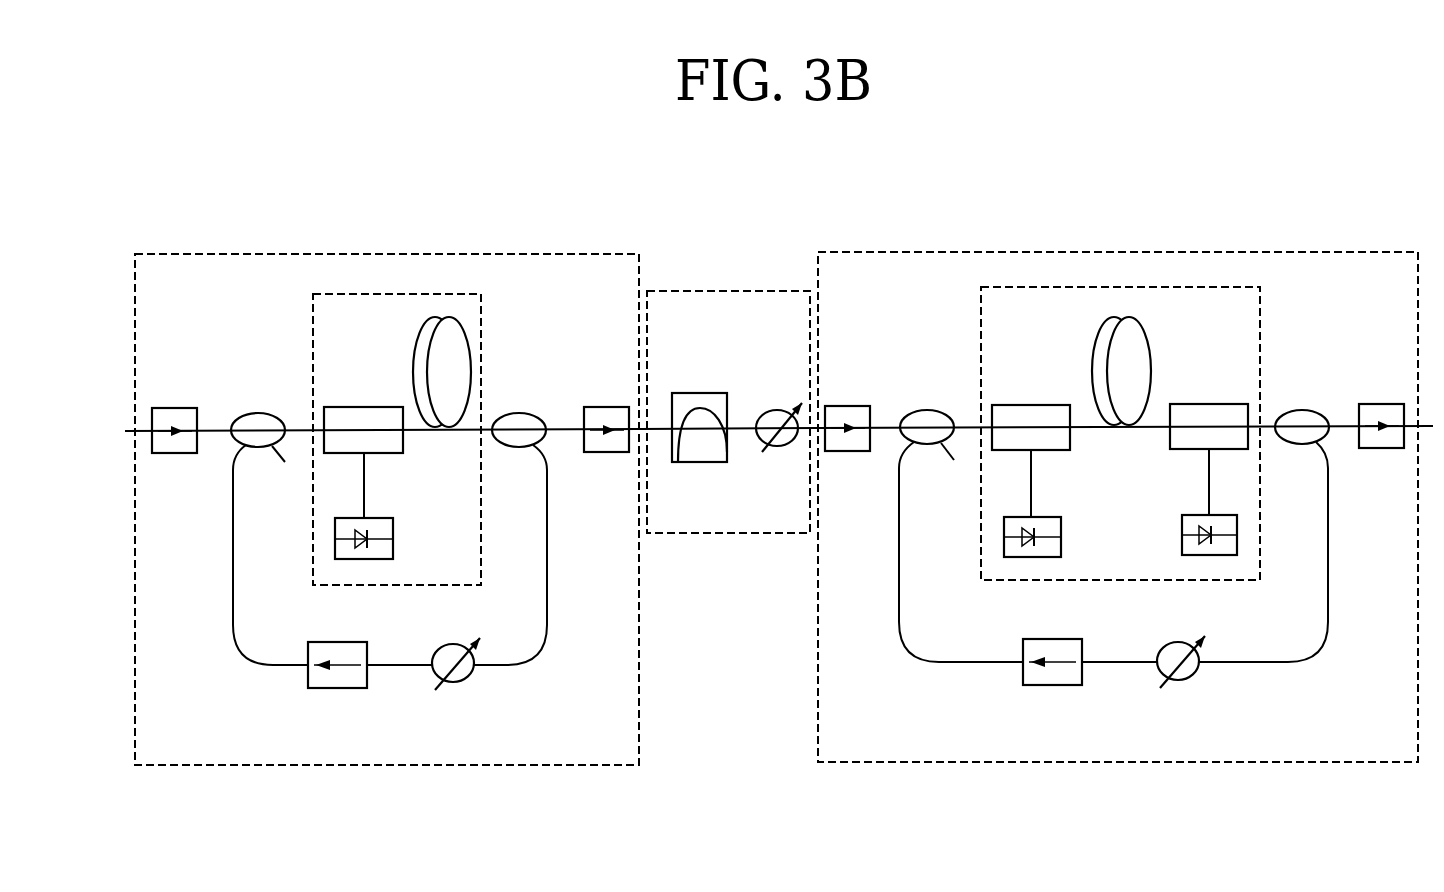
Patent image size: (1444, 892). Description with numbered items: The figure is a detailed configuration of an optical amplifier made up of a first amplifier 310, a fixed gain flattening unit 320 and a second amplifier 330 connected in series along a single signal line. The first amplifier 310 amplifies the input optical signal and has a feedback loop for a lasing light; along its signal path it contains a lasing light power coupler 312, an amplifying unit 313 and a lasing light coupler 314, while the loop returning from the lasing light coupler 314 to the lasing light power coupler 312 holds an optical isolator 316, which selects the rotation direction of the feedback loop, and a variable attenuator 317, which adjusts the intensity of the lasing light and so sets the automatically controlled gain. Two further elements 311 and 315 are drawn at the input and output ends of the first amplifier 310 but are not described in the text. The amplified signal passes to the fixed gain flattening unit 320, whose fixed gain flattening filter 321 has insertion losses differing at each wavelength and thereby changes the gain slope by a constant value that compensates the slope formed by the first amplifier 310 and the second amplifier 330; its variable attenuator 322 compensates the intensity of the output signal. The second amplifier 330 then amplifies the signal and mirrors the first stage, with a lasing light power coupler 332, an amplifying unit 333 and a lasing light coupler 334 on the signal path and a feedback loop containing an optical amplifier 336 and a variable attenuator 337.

The first amplifier 310 is at (385, 253).
The isolator 311 is at (175, 455).
The lasing light power coupler 312 is at (258, 440).
The amplifying unit 313 is at (313, 326).
The lasing light coupler 314 is at (516, 438).
The isolator 315 is at (605, 454).
The optical isolator 316 is at (337, 688).
The variable attenuator 317 is at (460, 682).
The fixed gain flattening unit 320 is at (735, 291).
The fixed gain flattening filter 321 is at (697, 462).
The variable attenuator 322 is at (785, 446).
The second amplifier 330 is at (1112, 252).
The lasing light power coupler 332 is at (927, 437).
The amplifying unit 333 is at (981, 327).
The lasing light coupler 334 is at (1302, 437).
The optical amplifier 336 is at (1052, 685).
The variable attenuator 337 is at (1187, 680).